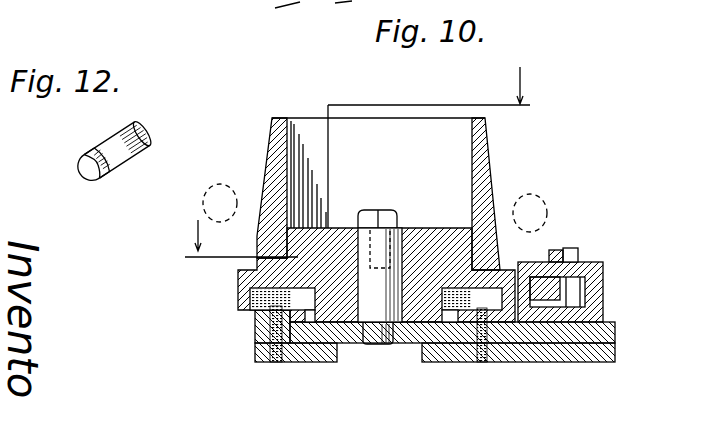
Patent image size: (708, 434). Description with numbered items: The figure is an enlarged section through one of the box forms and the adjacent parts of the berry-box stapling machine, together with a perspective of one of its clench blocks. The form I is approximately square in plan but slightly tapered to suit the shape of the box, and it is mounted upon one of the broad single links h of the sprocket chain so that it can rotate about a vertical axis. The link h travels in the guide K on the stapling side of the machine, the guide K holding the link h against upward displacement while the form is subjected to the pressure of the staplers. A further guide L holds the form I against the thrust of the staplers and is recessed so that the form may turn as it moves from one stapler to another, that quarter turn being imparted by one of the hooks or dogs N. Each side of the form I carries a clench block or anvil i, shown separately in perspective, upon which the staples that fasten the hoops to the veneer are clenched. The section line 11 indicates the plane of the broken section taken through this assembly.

In FIG. 10, the section line 11 is at (357, 169).
In FIG. 10, the form I is at (460, 160).
In FIG. 10, the clench block i is at (268, 252).
In FIG. 12, the clench block i is at (120, 170).
In FIG. 10, the guide K is at (250, 318).
In FIG. 10, the single link h is at (418, 335).
In FIG. 10, the hook N is at (548, 290).
In FIG. 10, the guide L is at (603, 296).